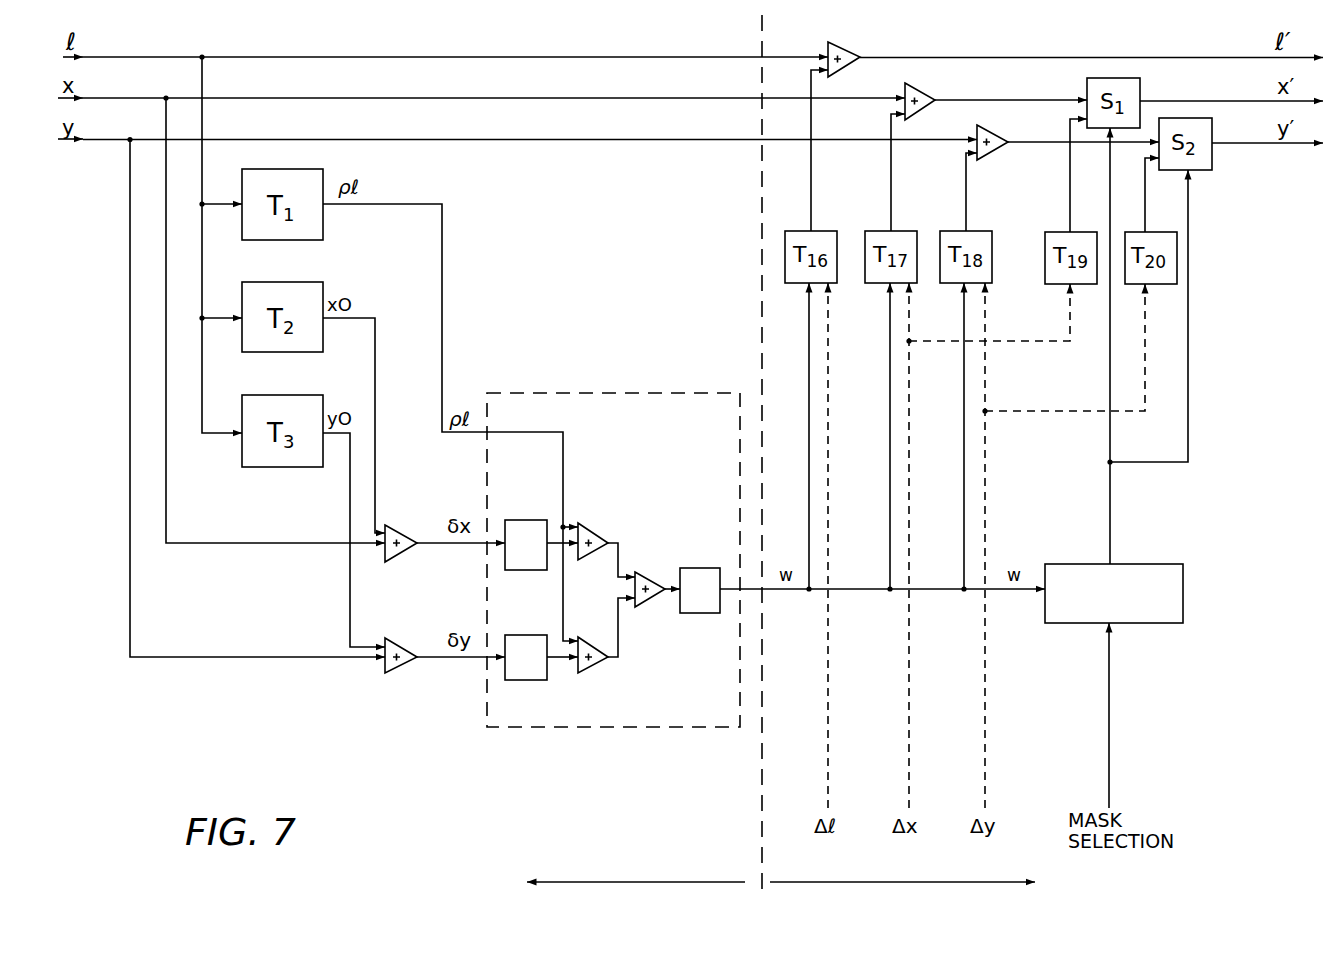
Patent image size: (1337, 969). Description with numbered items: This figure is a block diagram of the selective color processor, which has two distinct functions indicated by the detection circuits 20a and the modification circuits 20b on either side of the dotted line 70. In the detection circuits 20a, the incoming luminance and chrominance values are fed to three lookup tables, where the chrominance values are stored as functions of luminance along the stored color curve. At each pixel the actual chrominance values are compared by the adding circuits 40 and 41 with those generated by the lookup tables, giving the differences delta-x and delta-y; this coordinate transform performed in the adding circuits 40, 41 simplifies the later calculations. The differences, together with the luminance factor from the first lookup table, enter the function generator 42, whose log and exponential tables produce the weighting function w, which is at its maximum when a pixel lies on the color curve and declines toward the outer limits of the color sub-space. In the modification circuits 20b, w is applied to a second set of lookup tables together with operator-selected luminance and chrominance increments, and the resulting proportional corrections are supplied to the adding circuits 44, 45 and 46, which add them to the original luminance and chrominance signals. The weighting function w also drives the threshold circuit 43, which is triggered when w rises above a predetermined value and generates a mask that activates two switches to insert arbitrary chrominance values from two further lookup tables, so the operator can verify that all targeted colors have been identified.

The adding circuit 40 is at (422, 517).
The adding circuit 41 is at (422, 631).
The function generator 42 is at (656, 472).
The threshold circuit 43 is at (1192, 548).
The adding circuit 44 is at (850, 27).
The adding circuit 45 is at (920, 69).
The adding circuit 46 is at (995, 111).
The dotted line 70 is at (761, 806).
The detection circuits 20a is at (640, 867).
The modification circuits 20b is at (904, 867).